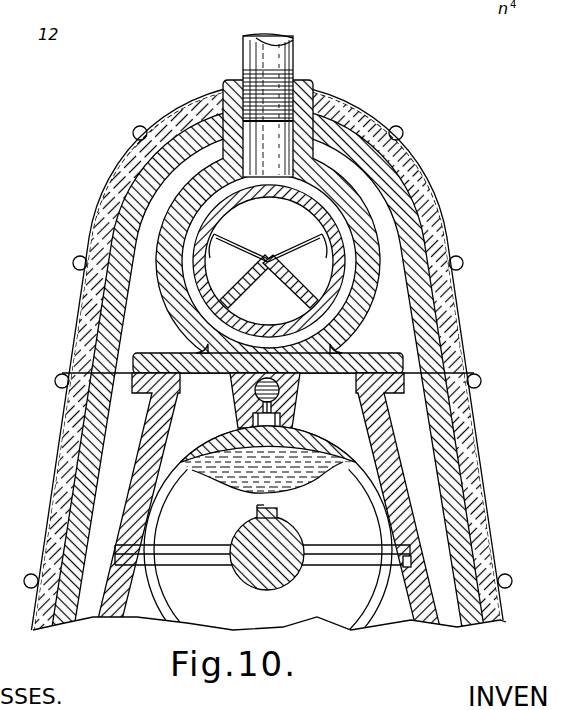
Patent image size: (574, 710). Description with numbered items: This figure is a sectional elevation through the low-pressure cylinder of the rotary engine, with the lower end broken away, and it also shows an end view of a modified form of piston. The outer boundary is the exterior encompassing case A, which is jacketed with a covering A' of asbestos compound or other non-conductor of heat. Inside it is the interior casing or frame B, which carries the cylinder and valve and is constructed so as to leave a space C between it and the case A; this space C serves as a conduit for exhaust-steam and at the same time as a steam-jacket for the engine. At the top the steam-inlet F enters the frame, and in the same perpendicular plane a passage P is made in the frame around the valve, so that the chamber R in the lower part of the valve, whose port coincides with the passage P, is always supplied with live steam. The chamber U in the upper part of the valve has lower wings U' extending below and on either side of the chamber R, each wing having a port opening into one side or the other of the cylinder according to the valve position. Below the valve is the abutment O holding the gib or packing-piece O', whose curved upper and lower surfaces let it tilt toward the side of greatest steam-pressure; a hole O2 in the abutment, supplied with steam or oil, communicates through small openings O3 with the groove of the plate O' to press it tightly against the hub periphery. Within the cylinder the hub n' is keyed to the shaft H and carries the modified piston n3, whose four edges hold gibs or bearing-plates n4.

The covering A' is at (267, 356).
The exterior encompassing case A is at (268, 363).
The space C is at (438, 227).
The interior casing or frame B is at (356, 203).
The steam-inlet F is at (292, 31).
The passage P is at (347, 274).
The chamber R is at (268, 273).
The chamber U is at (267, 237).
The wings U' is at (268, 257).
The abutment O is at (278, 400).
The hole O2 is at (236, 385).
The small openings O3 is at (240, 410).
The gib or packing-piece O' is at (289, 419).
The shaft H is at (232, 592).
The hub n' is at (284, 508).
The piston n3 is at (339, 566).
The gibs or bearing-plates n4 is at (404, 569).